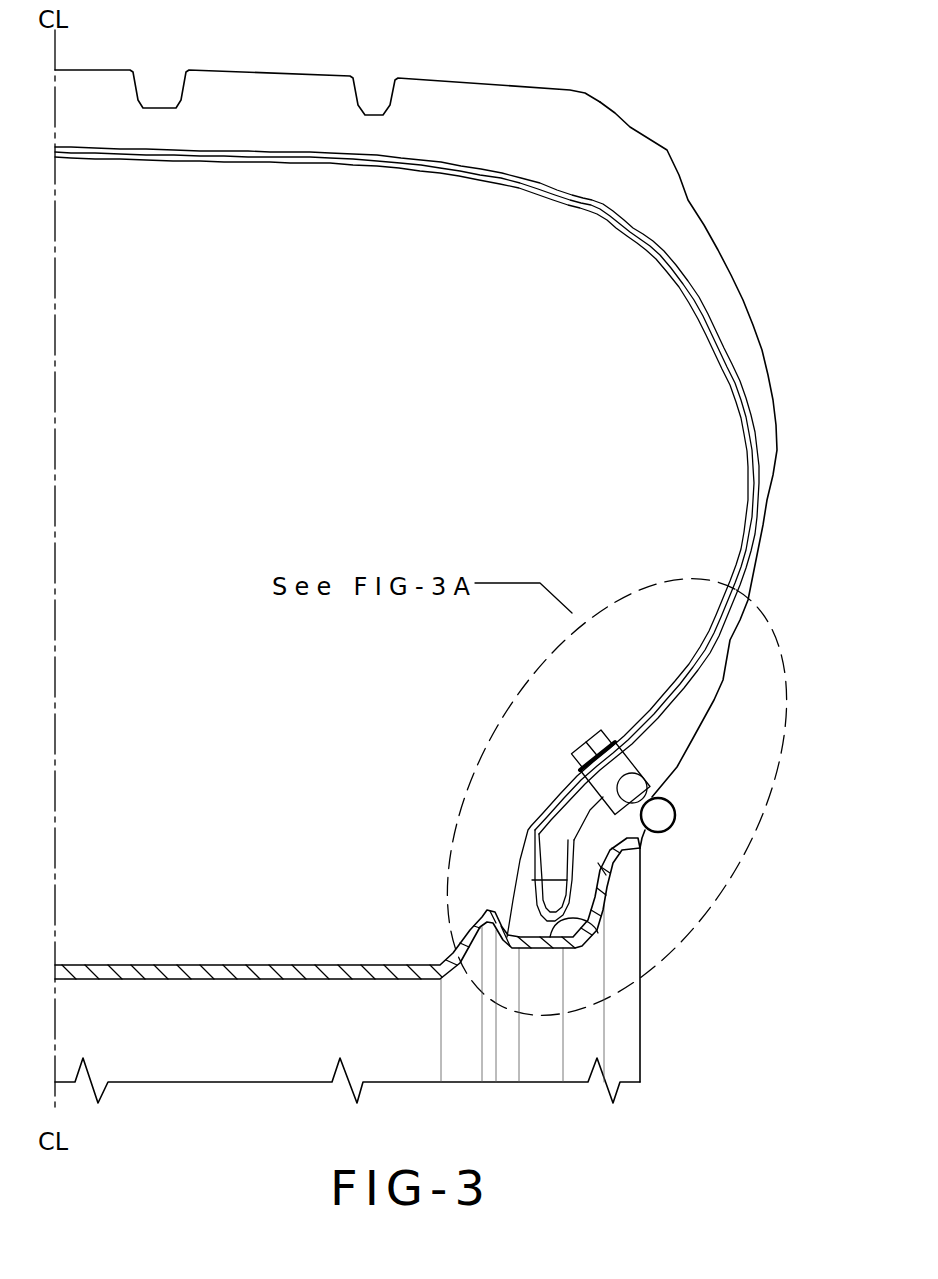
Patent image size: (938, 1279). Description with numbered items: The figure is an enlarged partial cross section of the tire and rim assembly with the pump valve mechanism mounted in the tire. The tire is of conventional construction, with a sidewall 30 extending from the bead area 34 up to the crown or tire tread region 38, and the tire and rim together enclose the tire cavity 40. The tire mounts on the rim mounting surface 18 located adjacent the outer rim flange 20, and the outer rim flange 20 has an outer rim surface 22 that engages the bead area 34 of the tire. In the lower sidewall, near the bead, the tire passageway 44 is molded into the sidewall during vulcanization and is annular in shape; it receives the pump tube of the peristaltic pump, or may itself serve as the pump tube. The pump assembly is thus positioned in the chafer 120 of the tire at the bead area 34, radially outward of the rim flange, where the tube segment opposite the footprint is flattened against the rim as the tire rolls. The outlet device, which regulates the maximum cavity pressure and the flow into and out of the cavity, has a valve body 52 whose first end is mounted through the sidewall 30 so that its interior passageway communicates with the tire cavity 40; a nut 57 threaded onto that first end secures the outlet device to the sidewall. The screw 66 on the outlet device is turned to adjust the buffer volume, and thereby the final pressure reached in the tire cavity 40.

The tire tread region 38 is at (273, 110).
The sidewall 30 is at (703, 252).
The tire cavity 40 is at (407, 542).
The nut 57 is at (603, 730).
The valve body 52 is at (634, 786).
The chafer 120 is at (680, 723).
The tire passageway 44 is at (640, 782).
The screw 66 is at (663, 813).
The outer rim surface 22 is at (598, 863).
The bead area 34 is at (547, 898).
The outer rim flange 20 is at (613, 857).
The rim mounting surface 18 is at (592, 926).